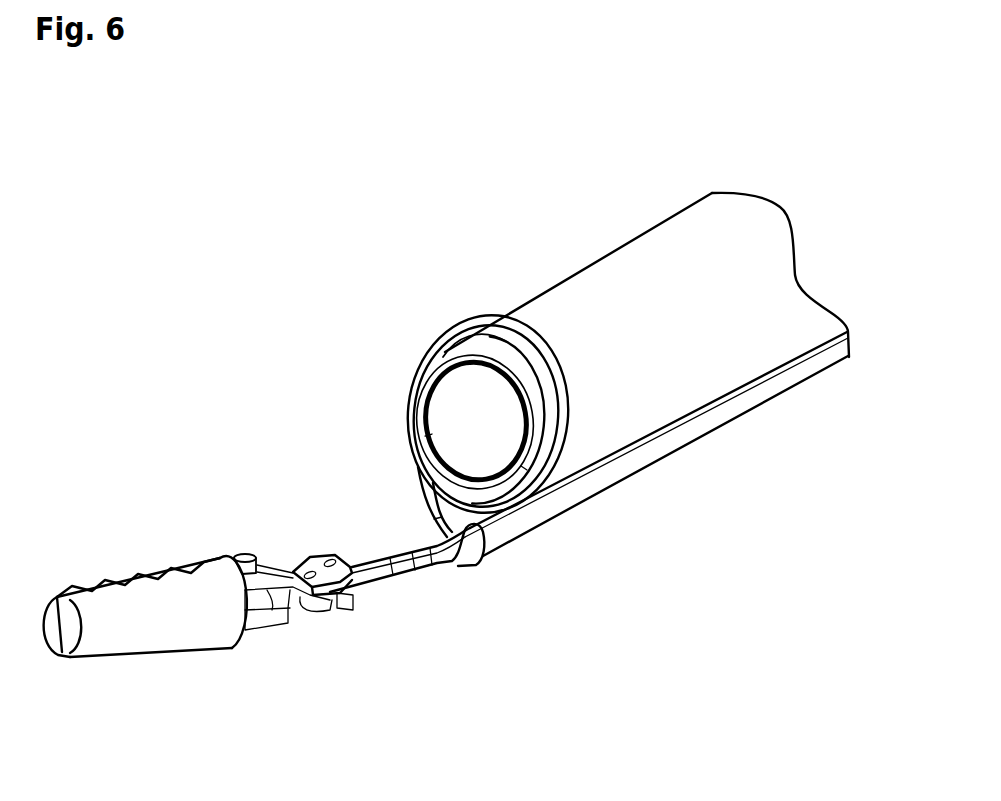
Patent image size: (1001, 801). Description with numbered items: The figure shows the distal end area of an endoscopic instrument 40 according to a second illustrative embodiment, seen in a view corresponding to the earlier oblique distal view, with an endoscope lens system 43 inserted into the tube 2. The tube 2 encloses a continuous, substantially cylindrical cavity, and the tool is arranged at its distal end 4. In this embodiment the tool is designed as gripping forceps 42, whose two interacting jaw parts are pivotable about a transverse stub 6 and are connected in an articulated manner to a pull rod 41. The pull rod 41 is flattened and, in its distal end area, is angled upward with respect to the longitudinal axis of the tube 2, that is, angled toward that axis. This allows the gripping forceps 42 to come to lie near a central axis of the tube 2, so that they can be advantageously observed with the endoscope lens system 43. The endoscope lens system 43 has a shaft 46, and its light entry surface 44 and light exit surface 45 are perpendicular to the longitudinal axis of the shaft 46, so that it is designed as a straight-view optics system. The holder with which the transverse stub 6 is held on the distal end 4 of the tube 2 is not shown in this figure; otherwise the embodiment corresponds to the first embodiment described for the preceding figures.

The tube 2 is at (588, 290).
The distal end 4 is at (421, 275).
The transverse stub 6 is at (249, 555).
The endoscopic instrument 40 is at (414, 175).
The pull rod 41 is at (393, 575).
The gripping forceps 42 is at (128, 538).
The endoscope lens system 43 is at (352, 392).
The light entry surface 44 is at (447, 425).
The light exit surface 45 is at (462, 480).
The shaft 46 is at (458, 343).